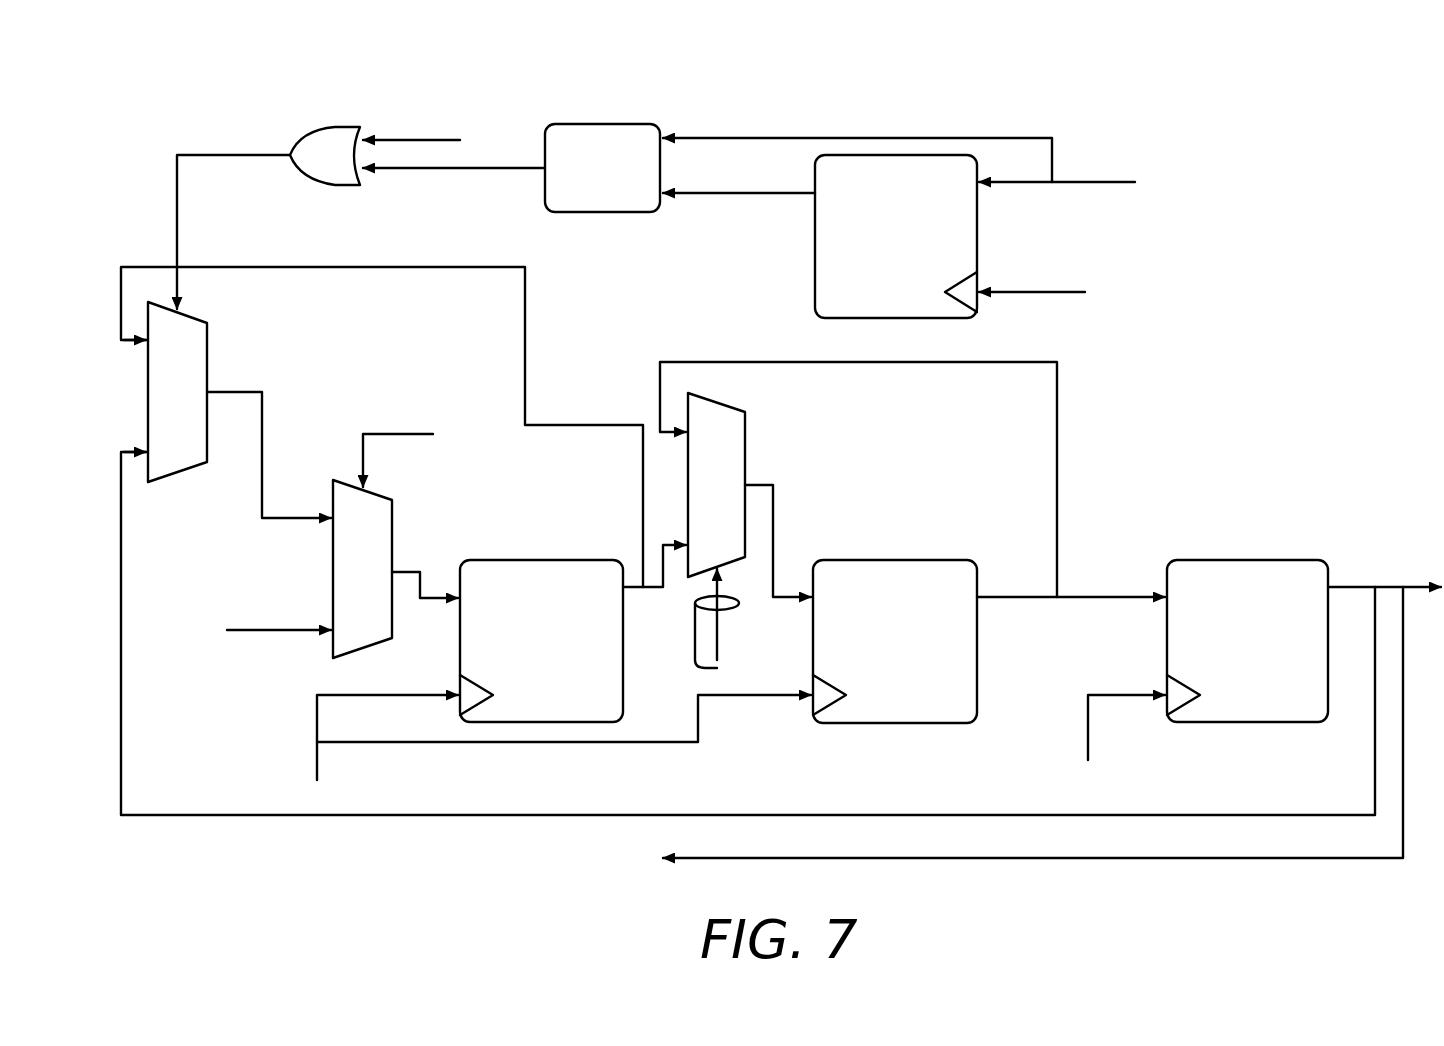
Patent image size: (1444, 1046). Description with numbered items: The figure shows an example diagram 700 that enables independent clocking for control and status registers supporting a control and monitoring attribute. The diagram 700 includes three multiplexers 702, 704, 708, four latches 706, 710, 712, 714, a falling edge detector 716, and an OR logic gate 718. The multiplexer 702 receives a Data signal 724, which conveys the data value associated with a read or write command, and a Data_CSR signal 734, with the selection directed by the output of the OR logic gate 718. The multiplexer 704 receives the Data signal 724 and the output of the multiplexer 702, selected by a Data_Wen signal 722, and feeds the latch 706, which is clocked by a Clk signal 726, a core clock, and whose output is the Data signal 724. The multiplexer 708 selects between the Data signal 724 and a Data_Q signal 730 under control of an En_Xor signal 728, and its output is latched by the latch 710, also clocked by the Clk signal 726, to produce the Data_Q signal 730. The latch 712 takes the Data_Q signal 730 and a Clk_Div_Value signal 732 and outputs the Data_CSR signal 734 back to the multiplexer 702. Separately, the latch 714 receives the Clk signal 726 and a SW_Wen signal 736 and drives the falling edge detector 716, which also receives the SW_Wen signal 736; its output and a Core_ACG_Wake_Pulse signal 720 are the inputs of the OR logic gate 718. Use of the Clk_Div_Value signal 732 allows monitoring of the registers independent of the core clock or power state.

The diagram 700 is at (228, 84).
The multiplexer 702 is at (382, 427).
The multiplexer 704 is at (395, 569).
The latch 706 is at (573, 633).
The multiplexer 708 is at (858, 479).
The latch 710 is at (895, 641).
The latch 712 is at (1247, 641).
The latch 714 is at (820, 236).
The falling edge detector 716 is at (511, 168).
The OR logic gate 718 is at (268, 218).
The Core_ACG_Wake_Pulse signal 720 is at (401, 126).
The Data_Wen signal 722 is at (409, 420).
The Data signal 724 is at (266, 616).
The Clk signal 726 is at (1068, 306).
The En_Xor signal 728 is at (748, 632).
The Data_Q signal 730 is at (1022, 580).
The Clk_Div_Value signal 732 is at (1128, 710).
The Data_CSR signal 734 is at (1358, 573).
The SW_Wen signal 736 is at (1118, 168).